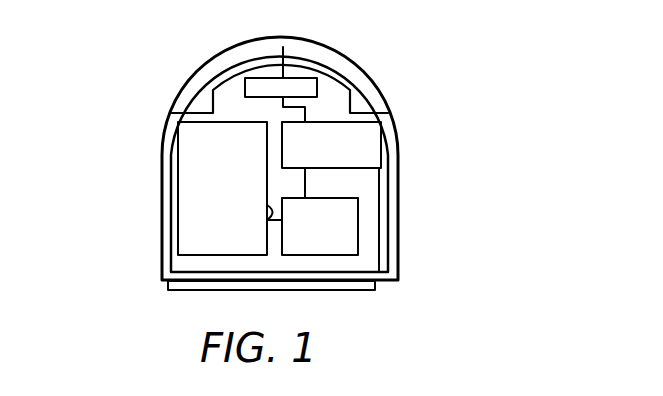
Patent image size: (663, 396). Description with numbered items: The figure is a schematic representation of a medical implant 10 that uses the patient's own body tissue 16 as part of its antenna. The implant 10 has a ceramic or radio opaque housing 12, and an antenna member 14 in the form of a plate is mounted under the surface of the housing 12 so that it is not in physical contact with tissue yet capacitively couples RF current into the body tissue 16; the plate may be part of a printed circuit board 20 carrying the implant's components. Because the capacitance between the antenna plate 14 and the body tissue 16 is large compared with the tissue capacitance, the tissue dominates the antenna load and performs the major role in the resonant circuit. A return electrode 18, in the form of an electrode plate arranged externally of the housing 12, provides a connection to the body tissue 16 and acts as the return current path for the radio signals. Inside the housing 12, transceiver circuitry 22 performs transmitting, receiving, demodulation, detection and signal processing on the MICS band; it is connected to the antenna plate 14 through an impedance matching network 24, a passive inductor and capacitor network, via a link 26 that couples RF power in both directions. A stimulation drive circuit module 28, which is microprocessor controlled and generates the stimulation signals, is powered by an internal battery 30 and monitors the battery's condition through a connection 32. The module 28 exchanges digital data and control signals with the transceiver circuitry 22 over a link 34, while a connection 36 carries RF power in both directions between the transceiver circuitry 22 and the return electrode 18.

The medical implant 10 is at (558, 145).
The housing 12 is at (321, 43).
The antenna member 14 is at (250, 50).
The body tissue 16 is at (518, 38).
The return electrode 18 is at (176, 295).
The printed circuit board 20 is at (218, 92).
The transceiver circuitry 22 is at (390, 130).
The impedance matching network 24 is at (318, 85).
The link 26 is at (310, 108).
The stimulation drive circuit module 28 is at (345, 257).
The internal battery 30 is at (178, 150).
The connection 32 is at (265, 203).
The link 34 is at (305, 187).
The connection 36 is at (378, 245).